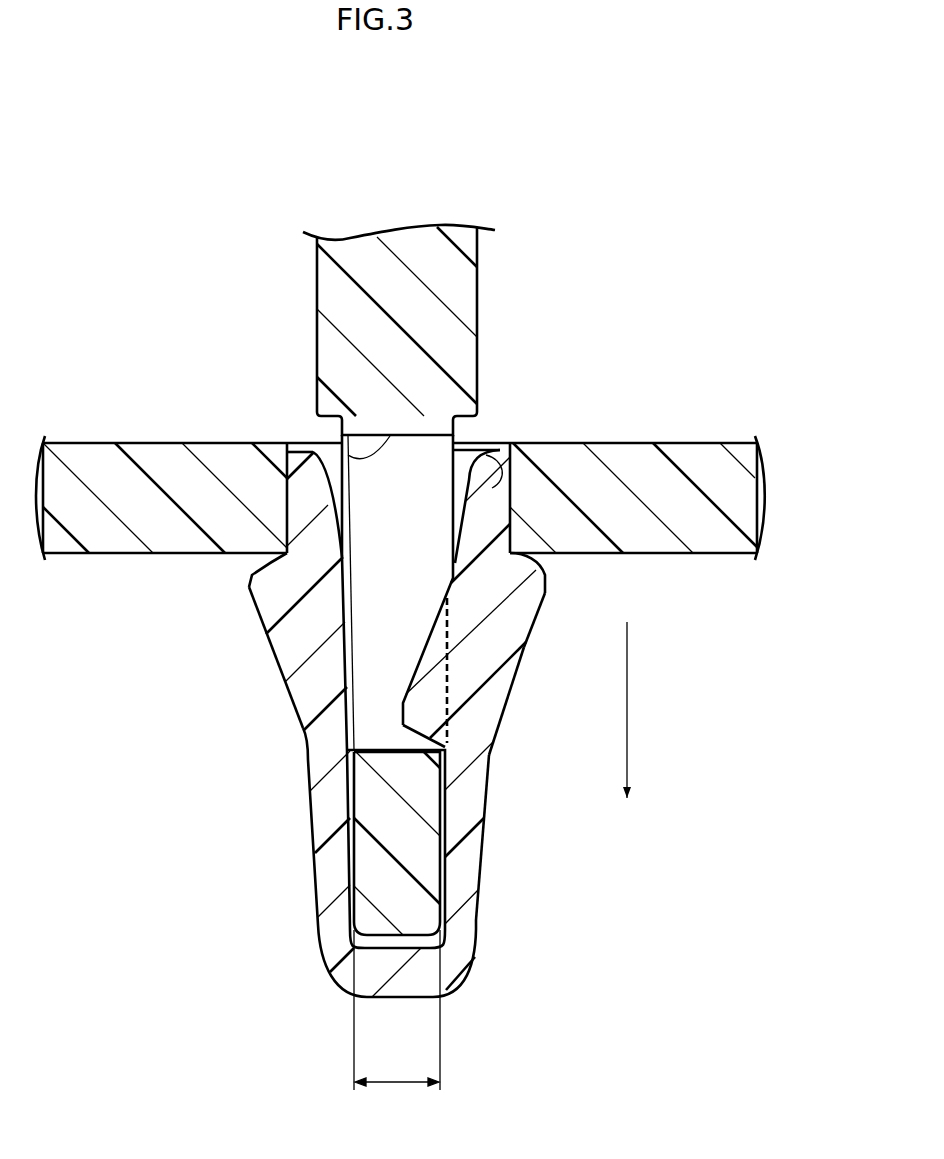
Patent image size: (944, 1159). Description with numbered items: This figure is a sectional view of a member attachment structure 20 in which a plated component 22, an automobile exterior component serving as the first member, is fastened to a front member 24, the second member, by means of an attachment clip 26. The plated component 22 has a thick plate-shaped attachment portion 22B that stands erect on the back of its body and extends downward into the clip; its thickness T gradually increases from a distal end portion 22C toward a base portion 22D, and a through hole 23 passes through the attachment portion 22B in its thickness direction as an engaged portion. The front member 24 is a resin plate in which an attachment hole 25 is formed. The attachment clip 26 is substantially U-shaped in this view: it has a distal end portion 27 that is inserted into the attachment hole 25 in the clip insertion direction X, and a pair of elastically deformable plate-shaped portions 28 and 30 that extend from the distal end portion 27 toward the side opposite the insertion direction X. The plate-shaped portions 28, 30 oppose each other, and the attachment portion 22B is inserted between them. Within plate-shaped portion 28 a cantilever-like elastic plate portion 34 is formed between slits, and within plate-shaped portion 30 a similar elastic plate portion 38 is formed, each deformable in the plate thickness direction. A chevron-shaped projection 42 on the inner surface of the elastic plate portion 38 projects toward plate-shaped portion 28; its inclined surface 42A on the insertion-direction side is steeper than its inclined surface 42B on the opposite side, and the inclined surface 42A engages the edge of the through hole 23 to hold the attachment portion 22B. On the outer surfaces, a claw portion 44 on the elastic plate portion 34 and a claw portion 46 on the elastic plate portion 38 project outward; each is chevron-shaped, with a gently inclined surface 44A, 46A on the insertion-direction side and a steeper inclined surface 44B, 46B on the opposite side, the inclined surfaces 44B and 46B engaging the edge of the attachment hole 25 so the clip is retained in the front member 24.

The member attachment structure 20 is at (133, 310).
The plated component 22 is at (483, 289).
The attachment portion 22B is at (376, 945).
The distal end portion 22C is at (402, 938).
The base portion 22D is at (468, 430).
The through hole 23 is at (332, 462).
The front member 24 is at (721, 557).
The attachment hole 25 is at (498, 446).
The attachment clip 26 is at (481, 928).
The distal end portion 27 is at (401, 998).
The plate-shaped portion 28 is at (307, 802).
The plate-shaped portion 30 is at (487, 816).
The elastic plate portion 34 is at (282, 693).
The elastic plate portion 38 is at (529, 665).
The projection 42 is at (397, 699).
The inclined surface 42A is at (413, 750).
The inclined surface 42B is at (420, 657).
The claw portion 44 is at (246, 592).
The inclined surface 44A is at (278, 671).
The inclined surface 44B is at (262, 564).
The claw portion 46 is at (546, 615).
The inclined surface 46A is at (511, 687).
The inclined surface 46B is at (538, 560).
The clip insertion direction X is at (632, 711).
The thickness T is at (392, 1083).